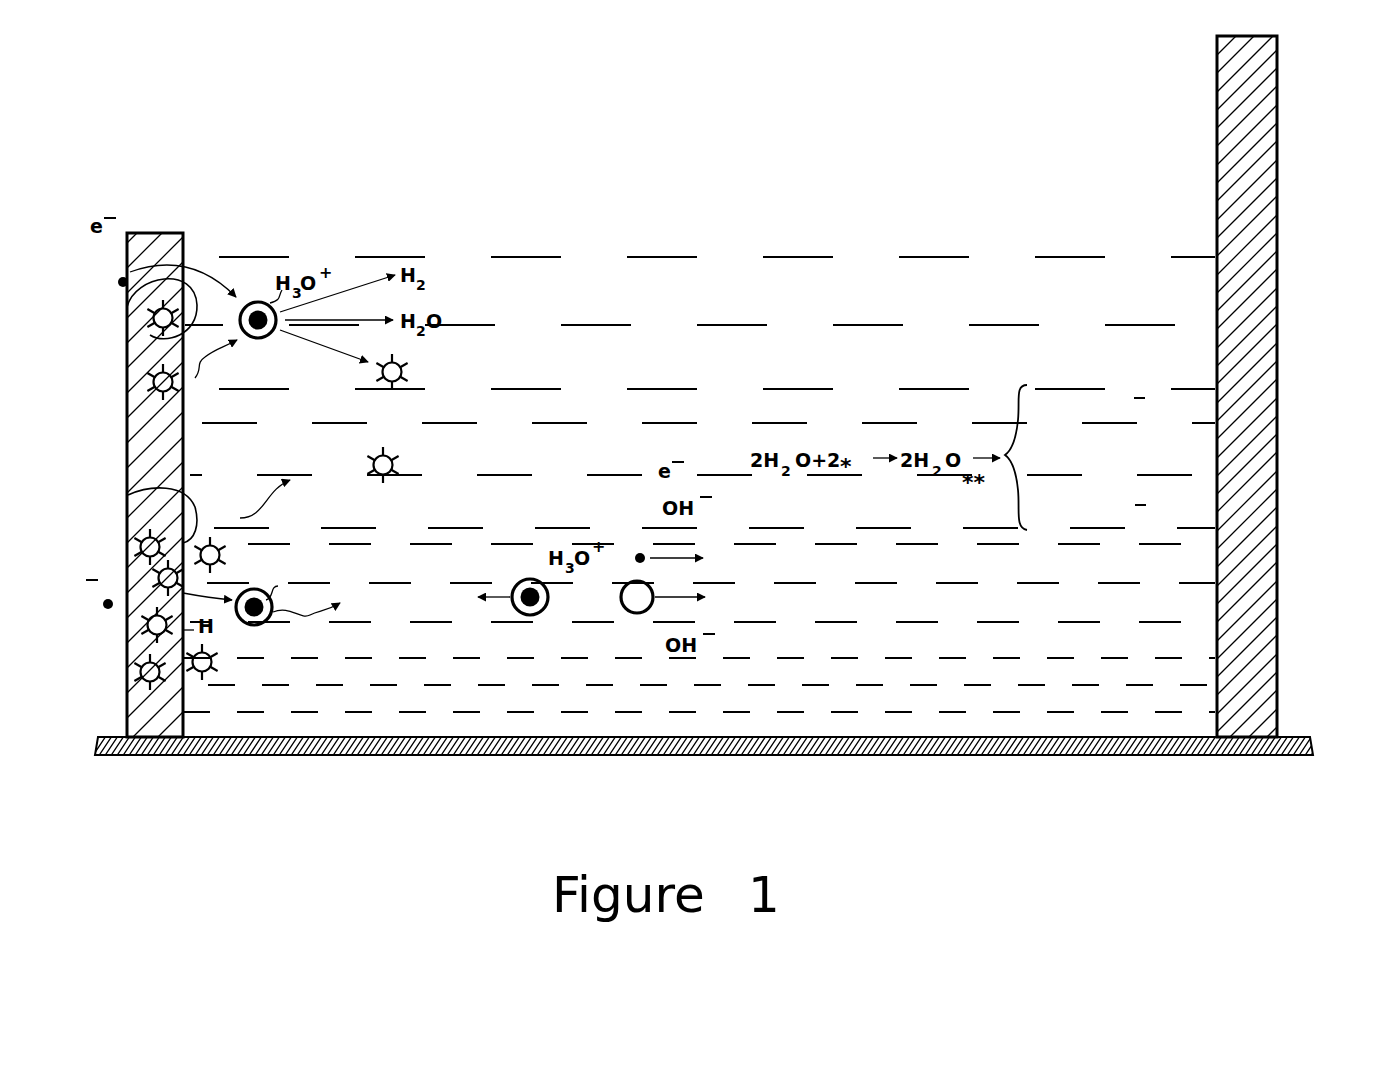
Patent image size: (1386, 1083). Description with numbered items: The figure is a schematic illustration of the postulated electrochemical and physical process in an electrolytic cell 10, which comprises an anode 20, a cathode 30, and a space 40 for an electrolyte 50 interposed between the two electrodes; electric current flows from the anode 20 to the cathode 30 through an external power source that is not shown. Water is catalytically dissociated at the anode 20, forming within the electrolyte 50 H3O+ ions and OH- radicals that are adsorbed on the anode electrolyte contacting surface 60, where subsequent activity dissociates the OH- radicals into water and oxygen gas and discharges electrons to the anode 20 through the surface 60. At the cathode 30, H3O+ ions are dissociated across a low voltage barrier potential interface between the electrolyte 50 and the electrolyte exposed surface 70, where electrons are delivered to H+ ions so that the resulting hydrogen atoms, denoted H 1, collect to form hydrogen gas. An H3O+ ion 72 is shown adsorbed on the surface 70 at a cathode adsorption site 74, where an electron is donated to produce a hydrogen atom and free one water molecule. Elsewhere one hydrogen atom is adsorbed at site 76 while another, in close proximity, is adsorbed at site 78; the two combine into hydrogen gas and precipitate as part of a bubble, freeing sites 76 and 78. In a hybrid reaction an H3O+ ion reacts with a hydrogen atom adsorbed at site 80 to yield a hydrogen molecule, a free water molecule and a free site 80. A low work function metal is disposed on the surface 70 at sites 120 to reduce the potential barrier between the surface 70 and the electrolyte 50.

The hydrogen atom 1 is at (127, 636).
The electrolytic cell 10 is at (892, 198).
The anode 20 is at (1285, 284).
The cathode 30 is at (127, 353).
The space 40 is at (578, 318).
The electrolyte 50 is at (590, 685).
The anode electrolyte contacting surface 60 is at (1215, 352).
The electrolyte exposed surface 70 is at (185, 437).
The H3O+ ion 72 is at (258, 622).
The cathode adsorption site 74 is at (398, 466).
The cathode adsorption site 76 is at (128, 548).
The cathode adsorption site 78 is at (200, 580).
The cathode adsorption site 80 is at (185, 392).
The sites 120 is at (127, 307).